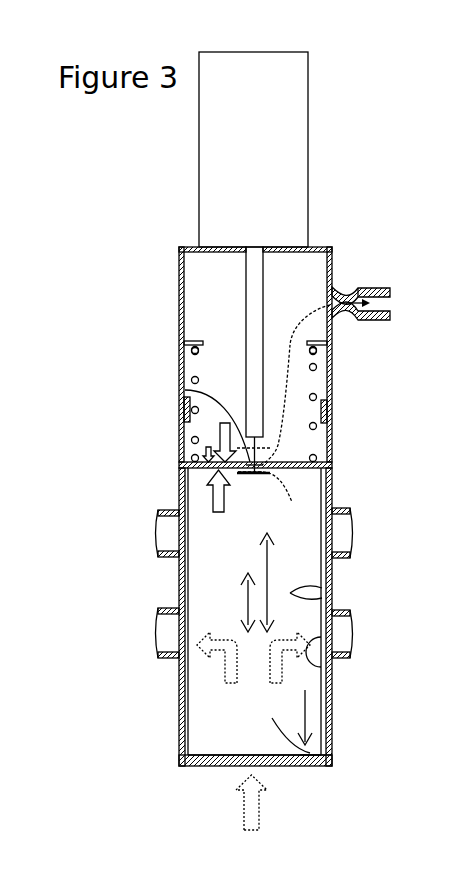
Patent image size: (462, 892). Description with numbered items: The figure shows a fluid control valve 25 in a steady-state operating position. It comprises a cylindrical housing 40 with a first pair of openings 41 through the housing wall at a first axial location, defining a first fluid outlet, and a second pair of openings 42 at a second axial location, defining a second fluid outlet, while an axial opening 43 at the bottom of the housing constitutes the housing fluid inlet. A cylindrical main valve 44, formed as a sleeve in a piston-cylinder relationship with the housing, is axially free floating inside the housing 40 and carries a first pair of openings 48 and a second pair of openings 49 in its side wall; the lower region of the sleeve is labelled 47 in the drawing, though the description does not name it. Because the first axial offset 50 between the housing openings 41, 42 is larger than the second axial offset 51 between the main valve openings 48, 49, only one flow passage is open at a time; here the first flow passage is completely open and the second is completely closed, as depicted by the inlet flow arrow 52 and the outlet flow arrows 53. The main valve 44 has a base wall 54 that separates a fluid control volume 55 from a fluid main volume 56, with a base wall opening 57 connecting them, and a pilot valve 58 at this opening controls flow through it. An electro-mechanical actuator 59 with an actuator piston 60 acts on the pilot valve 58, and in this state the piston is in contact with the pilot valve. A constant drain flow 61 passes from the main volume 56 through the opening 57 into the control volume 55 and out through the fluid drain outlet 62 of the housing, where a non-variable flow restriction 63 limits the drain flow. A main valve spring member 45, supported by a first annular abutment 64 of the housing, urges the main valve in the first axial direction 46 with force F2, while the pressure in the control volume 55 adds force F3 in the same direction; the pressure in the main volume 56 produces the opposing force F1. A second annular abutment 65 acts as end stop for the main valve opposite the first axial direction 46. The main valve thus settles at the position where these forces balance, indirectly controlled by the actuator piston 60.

The fluid control valve 25 is at (138, 156).
The electro-mechanical actuator 59 is at (221, 209).
The cylindrical housing 40 is at (180, 283).
The actuator piston 60 is at (257, 327).
The first annular abutment 64 is at (190, 343).
The base wall opening 57 is at (190, 396).
The second annular abutment 65 is at (327, 408).
The main valve spring member 45 is at (313, 397).
The fluid control volume 55 is at (300, 337).
The drain outlet flow 61 is at (300, 446).
The fluid drain outlet 62 is at (382, 303).
The non-variable flow restriction 63 is at (352, 290).
The base wall 54 is at (272, 470).
The pilot valve 58 is at (270, 474).
The fluid main volume 56 is at (270, 513).
The second pair of openings 42 is at (170, 523).
The first pair of openings 41 is at (170, 628).
The first axial offset 50 is at (267, 569).
The second axial offset 51 is at (248, 607).
The outlet flow arrows 53 is at (270, 682).
The bottom region 47 is at (243, 738).
The axial opening 43 is at (267, 762).
The cylindrical main valve 44 is at (310, 758).
The inlet flow arrow 52 is at (250, 810).
The second pair of openings of the main valve 49 is at (322, 597).
The first pair of openings of the main valve 48 is at (323, 672).
The first axial direction 46 is at (305, 720).
The axial force generated by fluid pressure in the main volume F1 is at (210, 490).
The axial force provided by the main valve spring member F2 is at (212, 445).
The axial force generated by fluid pressure in the control volume F3 is at (205, 430).